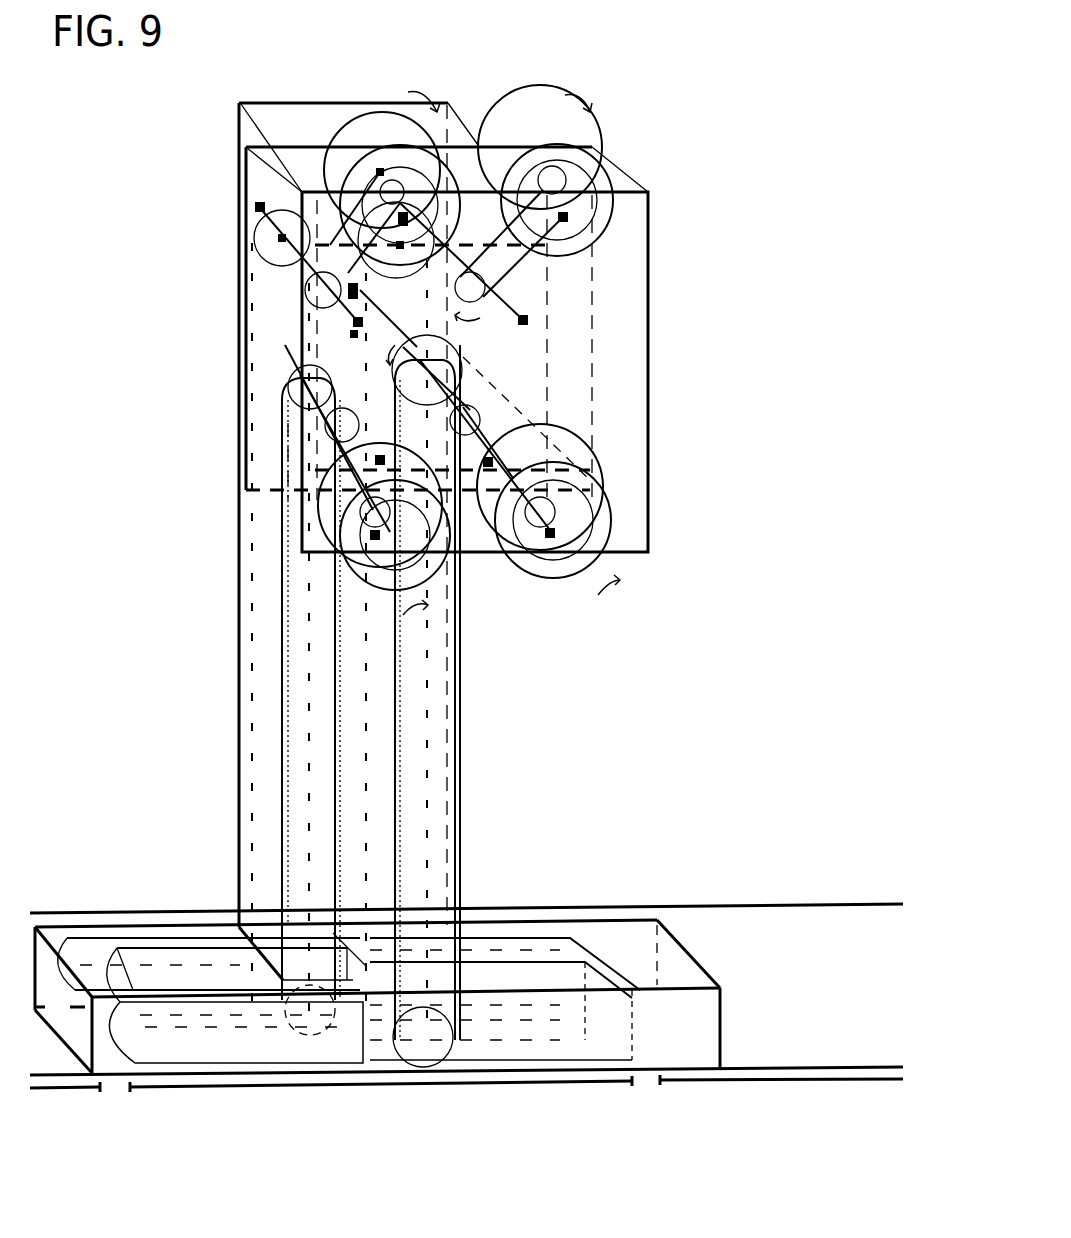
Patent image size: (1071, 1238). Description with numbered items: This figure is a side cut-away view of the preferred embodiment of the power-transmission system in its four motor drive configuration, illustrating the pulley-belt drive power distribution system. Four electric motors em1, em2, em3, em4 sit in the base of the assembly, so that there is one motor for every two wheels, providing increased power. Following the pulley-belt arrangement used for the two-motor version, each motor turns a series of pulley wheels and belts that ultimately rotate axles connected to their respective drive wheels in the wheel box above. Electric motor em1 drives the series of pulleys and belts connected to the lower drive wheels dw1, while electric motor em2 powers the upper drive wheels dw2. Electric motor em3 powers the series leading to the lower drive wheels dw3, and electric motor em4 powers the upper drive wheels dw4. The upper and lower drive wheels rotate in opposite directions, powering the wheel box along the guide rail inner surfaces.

The lower drive wheels dw1 is at (560, 485).
The upper drive wheels dw2 is at (555, 125).
The lower drive wheels dw3 is at (375, 530).
The upper drive wheels dw4 is at (370, 181).
The electric motor em1 is at (538, 982).
The electric motor em2 is at (497, 938).
The electric motor em3 is at (180, 977).
The electric motor em4 is at (123, 945).